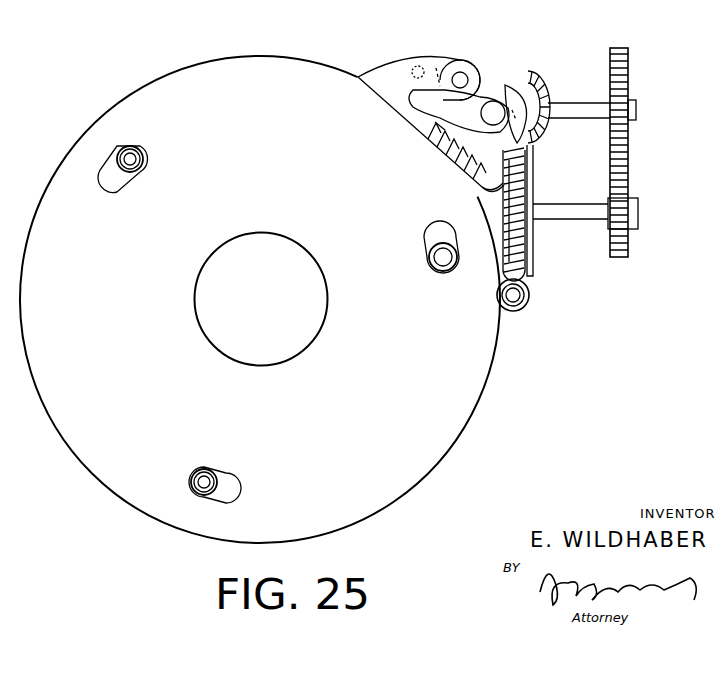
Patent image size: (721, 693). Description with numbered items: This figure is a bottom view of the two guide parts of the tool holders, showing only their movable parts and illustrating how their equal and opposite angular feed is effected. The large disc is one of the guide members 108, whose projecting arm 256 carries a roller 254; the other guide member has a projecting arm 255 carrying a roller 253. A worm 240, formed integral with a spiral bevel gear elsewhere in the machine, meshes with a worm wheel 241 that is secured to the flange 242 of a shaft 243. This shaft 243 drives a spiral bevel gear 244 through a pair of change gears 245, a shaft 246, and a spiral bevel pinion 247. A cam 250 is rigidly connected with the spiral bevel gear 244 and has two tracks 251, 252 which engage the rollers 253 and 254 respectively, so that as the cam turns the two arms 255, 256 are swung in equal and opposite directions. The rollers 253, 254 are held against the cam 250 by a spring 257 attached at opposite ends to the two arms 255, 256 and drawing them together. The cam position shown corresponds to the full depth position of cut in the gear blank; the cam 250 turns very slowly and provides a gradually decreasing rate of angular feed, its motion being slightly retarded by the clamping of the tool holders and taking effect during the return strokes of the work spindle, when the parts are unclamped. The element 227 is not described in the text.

The guide member 108 is at (195, 80).
The bolt 227 is at (430, 265).
The worm 240 is at (523, 307).
The worm wheel 241 is at (518, 218).
The flange 242 is at (528, 257).
The shaft 243 is at (580, 219).
The spiral bevel gear 244 is at (535, 90).
The change gears 245 is at (627, 182).
The shaft 246 is at (598, 108).
The spiral bevel pinion 247 is at (546, 127).
The cam 250 is at (487, 90).
The track 251 is at (520, 73).
The track 252 is at (460, 150).
The roller 253 is at (467, 60).
The roller 254 is at (480, 180).
The projecting arm 255 is at (393, 70).
The projecting arm 256 is at (500, 226).
The spring 257 is at (437, 128).